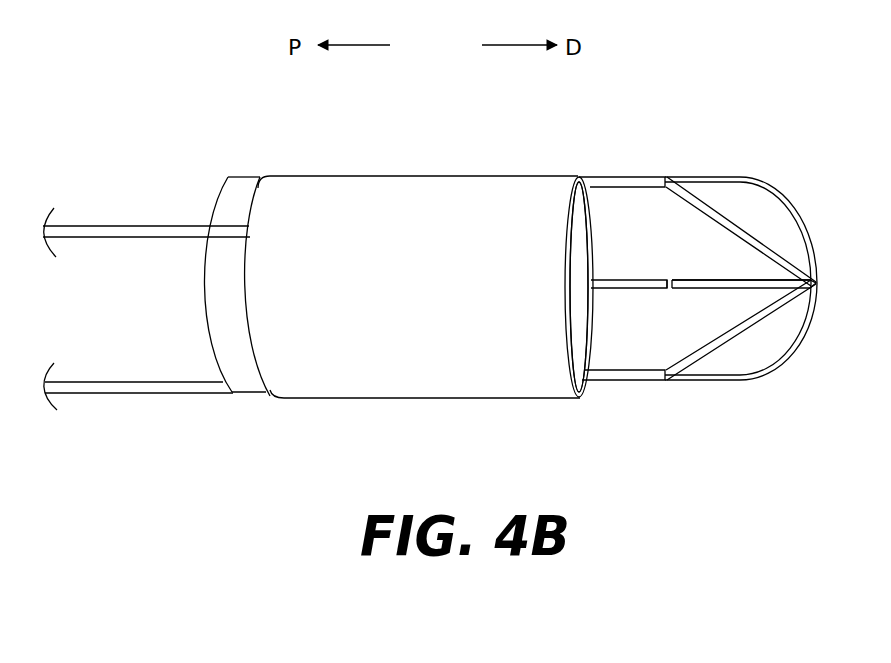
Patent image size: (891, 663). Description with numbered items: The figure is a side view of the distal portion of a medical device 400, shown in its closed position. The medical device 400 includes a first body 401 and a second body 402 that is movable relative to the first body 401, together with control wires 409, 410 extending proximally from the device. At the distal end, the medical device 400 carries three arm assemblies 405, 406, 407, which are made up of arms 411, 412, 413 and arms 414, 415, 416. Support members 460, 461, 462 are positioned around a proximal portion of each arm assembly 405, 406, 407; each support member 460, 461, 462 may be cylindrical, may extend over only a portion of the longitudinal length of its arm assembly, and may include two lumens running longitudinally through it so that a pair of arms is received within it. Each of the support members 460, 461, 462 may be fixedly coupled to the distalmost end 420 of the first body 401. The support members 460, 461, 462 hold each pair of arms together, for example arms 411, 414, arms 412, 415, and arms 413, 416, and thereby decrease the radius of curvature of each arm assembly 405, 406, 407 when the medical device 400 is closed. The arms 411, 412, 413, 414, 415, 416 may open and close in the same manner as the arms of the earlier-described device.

The medical device 400 is at (576, 151).
The first body 401 is at (442, 185).
The second body 402 is at (243, 183).
The arm assembly 405 is at (718, 393).
The arm assembly 406 is at (754, 158).
The arm assembly 407 is at (677, 296).
The control wire 409 is at (163, 388).
The control wire 410 is at (163, 230).
The arm 411 is at (778, 367).
The arm 412 is at (790, 207).
The arm 413 is at (743, 293).
The arm 414 is at (773, 310).
The arm 415 is at (783, 255).
The arm 416 is at (732, 283).
The distalmost end 420 is at (574, 323).
The support member 460 is at (643, 375).
The support member 461 is at (638, 180).
The support member 462 is at (610, 287).